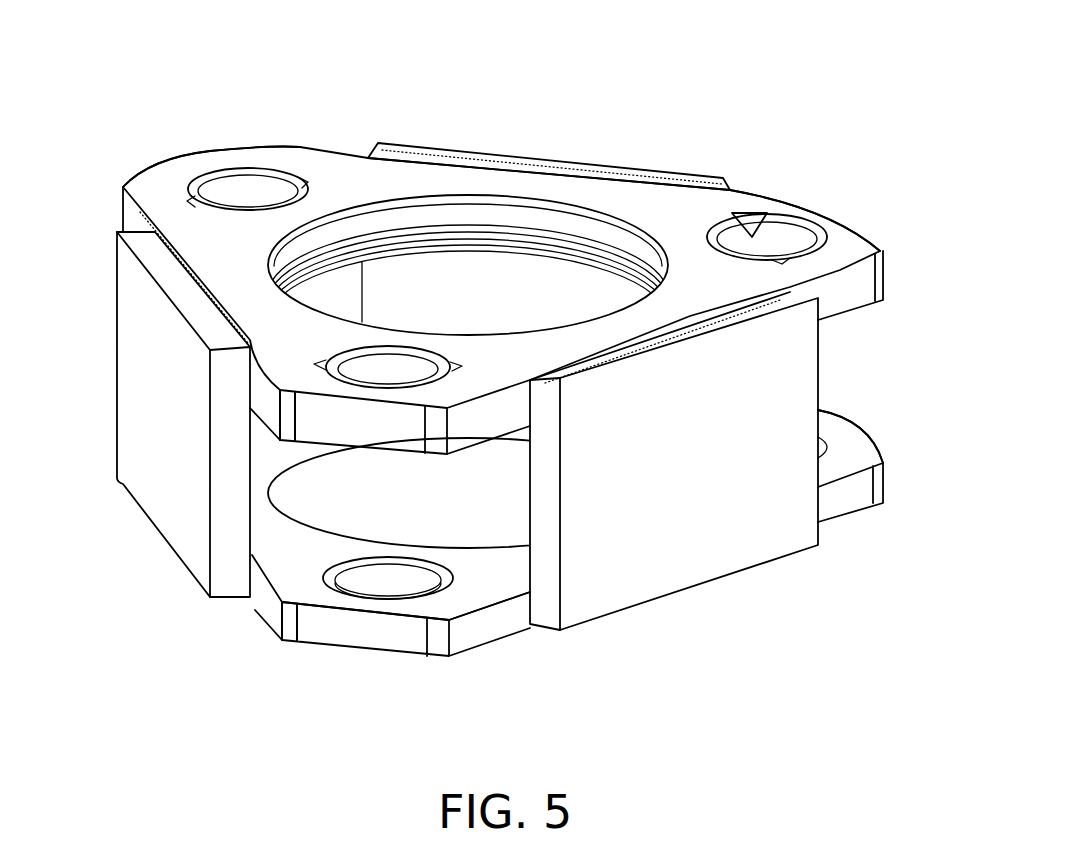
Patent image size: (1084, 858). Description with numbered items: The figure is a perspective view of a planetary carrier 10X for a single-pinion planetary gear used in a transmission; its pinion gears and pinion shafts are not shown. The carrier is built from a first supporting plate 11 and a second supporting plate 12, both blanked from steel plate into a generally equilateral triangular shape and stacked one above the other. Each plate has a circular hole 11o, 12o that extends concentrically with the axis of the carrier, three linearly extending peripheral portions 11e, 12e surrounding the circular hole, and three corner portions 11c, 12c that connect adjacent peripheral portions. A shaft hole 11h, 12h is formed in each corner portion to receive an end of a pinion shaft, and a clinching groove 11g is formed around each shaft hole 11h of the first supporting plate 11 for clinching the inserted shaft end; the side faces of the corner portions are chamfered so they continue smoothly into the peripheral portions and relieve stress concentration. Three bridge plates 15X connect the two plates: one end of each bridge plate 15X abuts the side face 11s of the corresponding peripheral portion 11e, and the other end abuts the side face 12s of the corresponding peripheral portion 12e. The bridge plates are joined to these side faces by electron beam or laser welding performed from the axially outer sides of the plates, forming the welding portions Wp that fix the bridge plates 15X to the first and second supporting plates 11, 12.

The planetary carrier 10X is at (290, 133).
The first supporting plate 11 is at (882, 242).
The corner portion 11c is at (180, 208).
The peripheral portion 11e is at (237, 273).
The clinching groove 11g is at (745, 212).
The shaft hole 11h is at (385, 365).
The circular hole 11o is at (548, 299).
The side face 11s is at (272, 390).
The second supporting plate 12 is at (880, 445).
The corner portion 12c is at (370, 607).
The peripheral portion 12e is at (260, 542).
The shaft hole 12h is at (389, 580).
The circular hole 12o is at (505, 503).
The side face 12s is at (268, 600).
The bridge plate 15X is at (413, 150).
The welding portion Wp is at (480, 160).